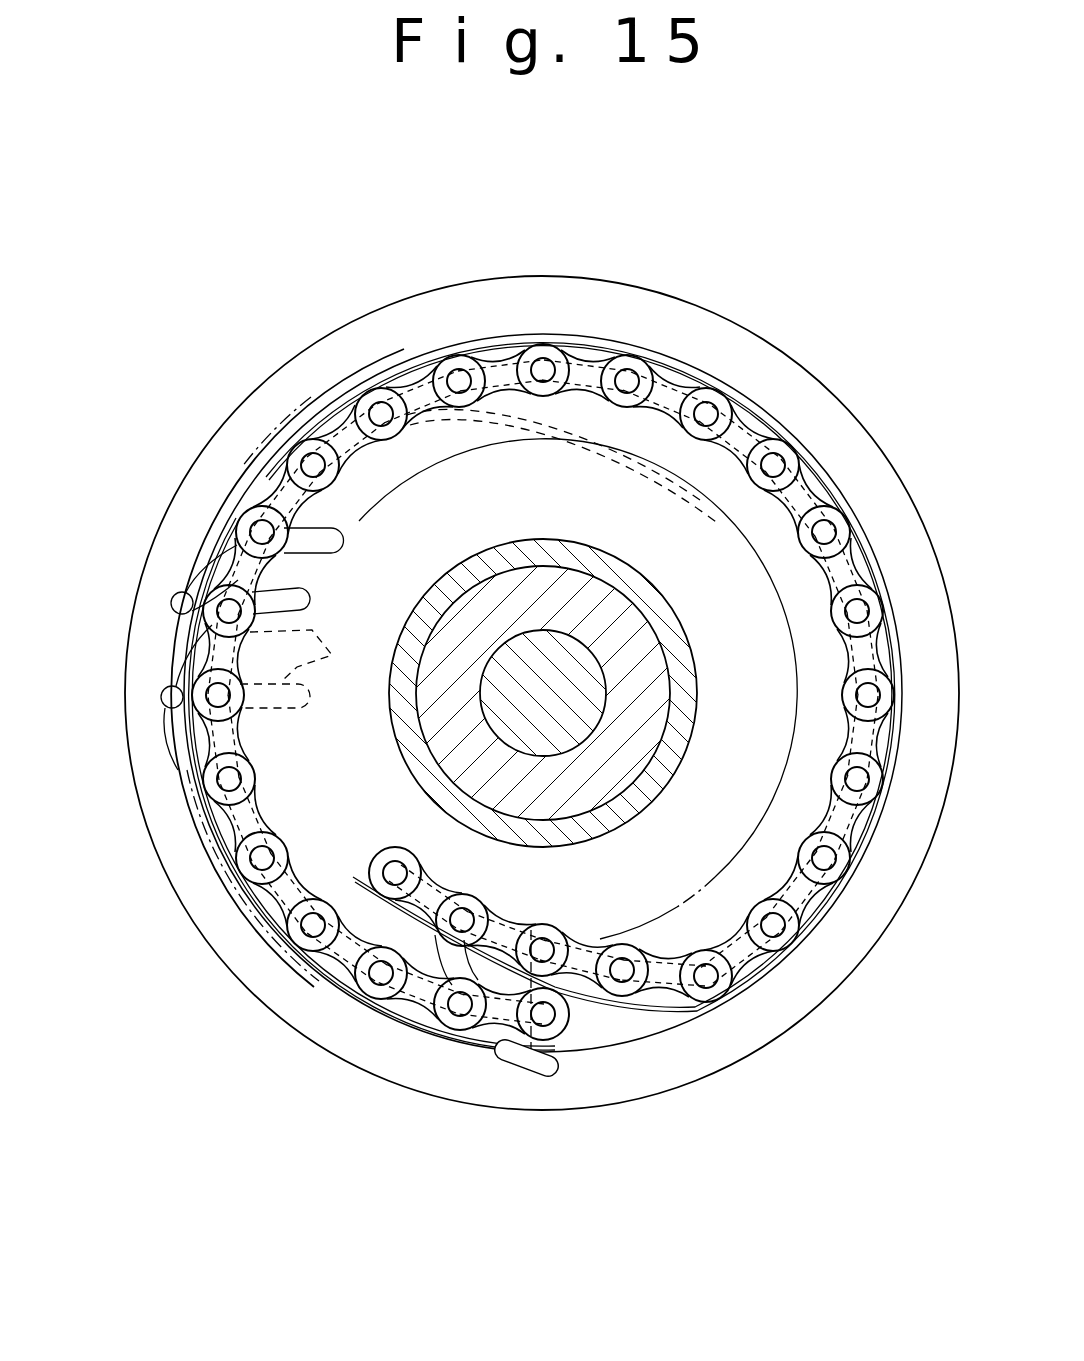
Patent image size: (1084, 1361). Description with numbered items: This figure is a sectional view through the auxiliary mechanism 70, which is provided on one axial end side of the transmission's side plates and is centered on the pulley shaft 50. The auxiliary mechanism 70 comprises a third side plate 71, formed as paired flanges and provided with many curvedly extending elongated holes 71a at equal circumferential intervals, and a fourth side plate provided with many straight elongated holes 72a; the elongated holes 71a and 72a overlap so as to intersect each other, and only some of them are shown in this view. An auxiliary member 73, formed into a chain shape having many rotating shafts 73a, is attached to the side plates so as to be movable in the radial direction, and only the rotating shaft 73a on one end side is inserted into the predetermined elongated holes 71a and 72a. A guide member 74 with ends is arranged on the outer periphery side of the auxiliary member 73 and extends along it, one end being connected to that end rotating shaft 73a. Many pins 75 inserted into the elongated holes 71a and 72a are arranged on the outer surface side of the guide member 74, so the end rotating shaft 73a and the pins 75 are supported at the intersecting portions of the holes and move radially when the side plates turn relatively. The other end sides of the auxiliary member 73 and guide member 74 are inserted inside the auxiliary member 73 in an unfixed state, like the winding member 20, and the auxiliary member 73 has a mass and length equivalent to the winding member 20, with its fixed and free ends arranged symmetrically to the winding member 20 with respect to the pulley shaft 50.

The winding member 20 is at (682, 505).
The pulley shaft 50 is at (548, 700).
The auxiliary mechanism 70 is at (668, 340).
The third side plate 71 is at (538, 1110).
The elongated holes 71a is at (345, 548).
The elongated holes 72a is at (300, 662).
The auxiliary member 73 is at (494, 360).
The rotating shaft 73a is at (452, 378).
The guide member 74 is at (667, 1010).
The pins 75 is at (172, 598).